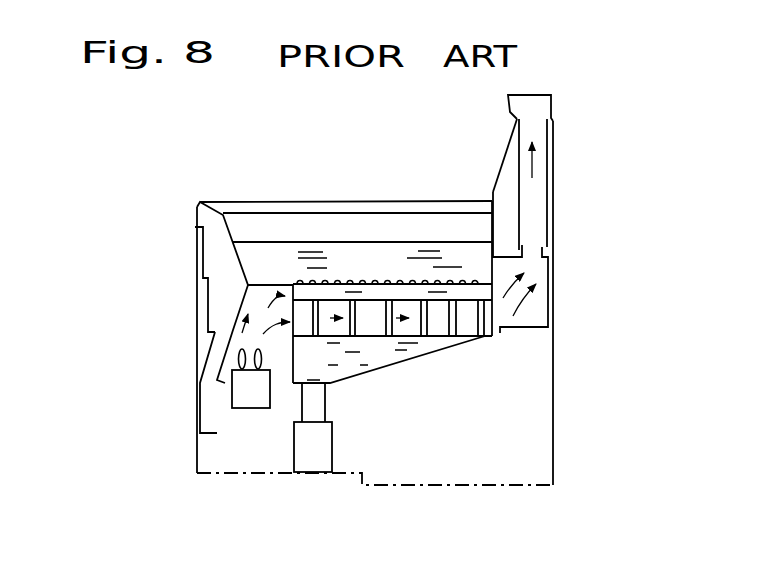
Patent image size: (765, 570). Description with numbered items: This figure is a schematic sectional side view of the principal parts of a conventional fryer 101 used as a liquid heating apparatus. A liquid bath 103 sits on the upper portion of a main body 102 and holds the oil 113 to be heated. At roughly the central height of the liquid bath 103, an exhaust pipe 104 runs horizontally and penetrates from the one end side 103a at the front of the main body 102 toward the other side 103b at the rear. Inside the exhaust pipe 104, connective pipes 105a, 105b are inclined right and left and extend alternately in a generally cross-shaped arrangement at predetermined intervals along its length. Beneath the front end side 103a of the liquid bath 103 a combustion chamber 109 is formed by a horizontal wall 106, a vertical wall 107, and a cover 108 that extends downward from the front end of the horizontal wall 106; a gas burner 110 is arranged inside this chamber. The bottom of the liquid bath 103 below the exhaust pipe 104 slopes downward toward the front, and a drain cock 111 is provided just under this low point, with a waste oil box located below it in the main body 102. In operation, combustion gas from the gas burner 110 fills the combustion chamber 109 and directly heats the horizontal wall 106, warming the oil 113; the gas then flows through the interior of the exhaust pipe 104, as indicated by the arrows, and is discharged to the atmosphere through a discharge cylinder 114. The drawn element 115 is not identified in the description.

The fryer 101 is at (578, 124).
The main body 102 is at (553, 393).
The liquid bath 103 is at (230, 245).
The one end side 103a is at (252, 286).
The other side 103b is at (486, 280).
The exhaust pipe 104 is at (434, 342).
The connective pipe 105a is at (333, 338).
The connective pipe 105b is at (358, 304).
The horizontal wall 106 is at (257, 301).
The vertical wall 107 is at (295, 374).
The cover 108 is at (220, 350).
The combustion chamber 109 is at (272, 318).
The gas burner 110 is at (233, 402).
The drain cock 111 is at (324, 462).
The oil 113 is at (427, 250).
The discharge cylinder 114 is at (547, 207).
The porous / bubble array 115 is at (375, 278).